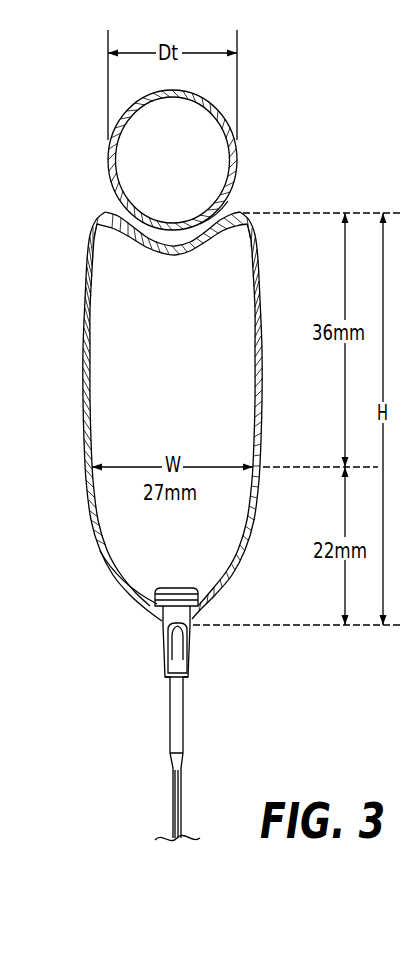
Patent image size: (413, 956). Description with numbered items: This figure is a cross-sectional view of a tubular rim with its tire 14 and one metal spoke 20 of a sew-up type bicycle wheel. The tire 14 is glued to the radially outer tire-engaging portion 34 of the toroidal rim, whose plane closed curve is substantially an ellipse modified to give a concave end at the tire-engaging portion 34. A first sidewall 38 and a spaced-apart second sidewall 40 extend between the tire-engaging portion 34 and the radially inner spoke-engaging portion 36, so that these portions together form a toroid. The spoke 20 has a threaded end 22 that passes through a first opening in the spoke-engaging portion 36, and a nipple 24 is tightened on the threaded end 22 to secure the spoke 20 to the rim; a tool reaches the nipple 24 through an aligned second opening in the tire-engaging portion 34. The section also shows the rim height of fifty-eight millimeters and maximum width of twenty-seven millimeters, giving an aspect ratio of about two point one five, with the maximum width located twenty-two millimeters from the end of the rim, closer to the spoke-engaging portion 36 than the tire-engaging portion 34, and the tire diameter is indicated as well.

The tire 14 is at (108, 163).
The tire-engaging portion 34 is at (240, 191).
The first sidewall 38 is at (83, 360).
The second sidewall 40 is at (262, 380).
The nipple 24 is at (153, 628).
The spoke-engaging portion 36 is at (157, 636).
The threaded end 22 is at (177, 648).
The spoke 20 is at (178, 717).